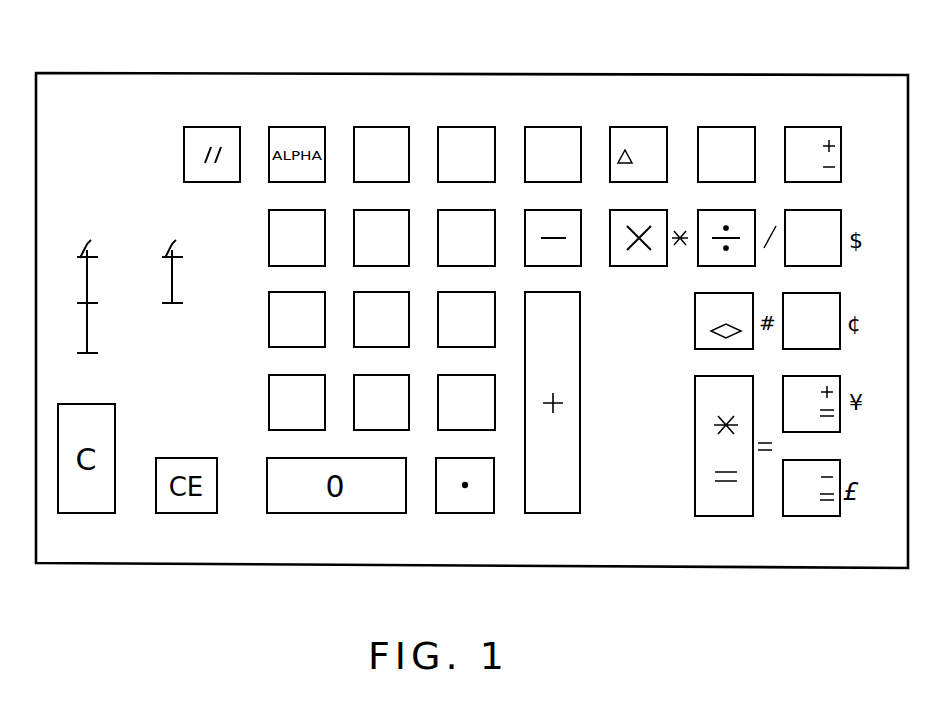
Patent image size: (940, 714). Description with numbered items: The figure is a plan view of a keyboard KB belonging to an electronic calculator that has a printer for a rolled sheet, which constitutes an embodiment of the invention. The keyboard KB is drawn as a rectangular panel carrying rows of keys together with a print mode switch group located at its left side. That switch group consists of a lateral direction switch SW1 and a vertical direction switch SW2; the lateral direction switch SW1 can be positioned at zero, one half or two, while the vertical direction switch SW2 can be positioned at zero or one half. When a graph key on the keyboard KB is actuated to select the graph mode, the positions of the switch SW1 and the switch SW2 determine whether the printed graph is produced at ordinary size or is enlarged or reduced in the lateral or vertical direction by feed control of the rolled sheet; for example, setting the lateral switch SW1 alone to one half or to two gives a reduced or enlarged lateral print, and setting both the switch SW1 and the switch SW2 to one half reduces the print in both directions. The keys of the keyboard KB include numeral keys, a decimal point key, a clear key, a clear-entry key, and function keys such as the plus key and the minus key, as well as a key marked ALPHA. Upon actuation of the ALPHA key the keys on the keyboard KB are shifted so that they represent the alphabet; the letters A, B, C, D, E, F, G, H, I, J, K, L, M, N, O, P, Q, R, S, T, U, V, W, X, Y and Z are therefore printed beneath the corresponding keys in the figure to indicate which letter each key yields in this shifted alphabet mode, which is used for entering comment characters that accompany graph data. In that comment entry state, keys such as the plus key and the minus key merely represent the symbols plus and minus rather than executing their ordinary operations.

The keyboard KB is at (707, 73).
The lateral direction switch SW1 is at (91, 289).
The vertical direction switch SW2 is at (185, 264).
The key position letter A is at (381, 167).
The key position letter B is at (466, 167).
The key position letter C is at (553, 167).
The key position letter D is at (638, 167).
The key position letter E is at (726, 167).
The key position letter F is at (813, 167).
The key position letter G is at (297, 250).
The key position letter H is at (381, 250).
The key position letter I is at (466, 250).
The key position letter J is at (553, 250).
The key position letter K is at (638, 250).
The key position letter L is at (726, 250).
The key position letter M is at (813, 250).
The key position letter N is at (297, 332).
The key position letter O is at (381, 332).
The key position letter P is at (466, 332).
The key position letter Q is at (724, 333).
The key position letter R is at (811, 333).
The key position letter S is at (297, 415).
The key position letter T is at (381, 415).
The key position letter U is at (466, 415).
The key position letter V is at (811, 416).
The key position letter W is at (465, 498).
The key position letter X is at (552, 415).
The key position letter Y is at (724, 459).
The key position letter Z is at (811, 501).